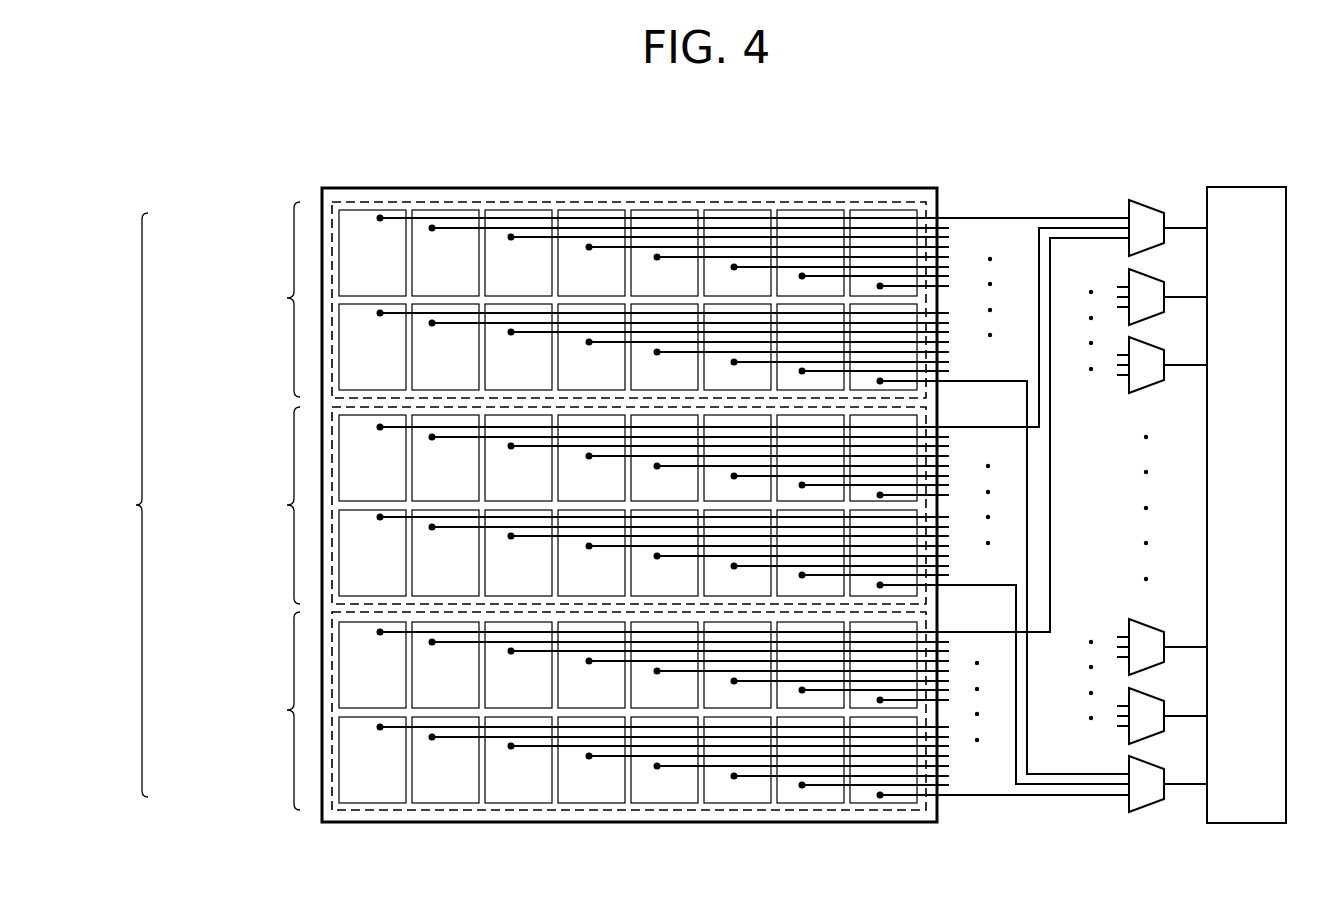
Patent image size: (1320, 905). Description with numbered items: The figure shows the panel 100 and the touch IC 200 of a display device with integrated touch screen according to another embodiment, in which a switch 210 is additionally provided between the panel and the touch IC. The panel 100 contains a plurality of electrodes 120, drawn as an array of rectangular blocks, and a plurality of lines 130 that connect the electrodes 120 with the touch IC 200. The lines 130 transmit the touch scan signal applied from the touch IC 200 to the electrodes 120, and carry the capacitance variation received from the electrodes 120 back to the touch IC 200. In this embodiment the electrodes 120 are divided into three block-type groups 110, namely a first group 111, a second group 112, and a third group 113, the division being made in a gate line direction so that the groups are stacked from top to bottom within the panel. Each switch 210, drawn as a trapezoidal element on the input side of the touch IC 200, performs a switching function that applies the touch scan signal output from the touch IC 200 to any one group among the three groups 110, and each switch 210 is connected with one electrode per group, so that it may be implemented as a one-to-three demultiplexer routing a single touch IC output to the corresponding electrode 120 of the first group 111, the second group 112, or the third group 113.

The panel 100 is at (860, 823).
The groups 110 is at (521, 530).
The first group 111 is at (337, 214).
The second group 112 is at (337, 428).
The third group 113 is at (339, 813).
The electrodes 120 is at (371, 781).
The lines 130 is at (681, 767).
The touch IC 200 is at (1228, 497).
The switch 210 is at (1150, 806).